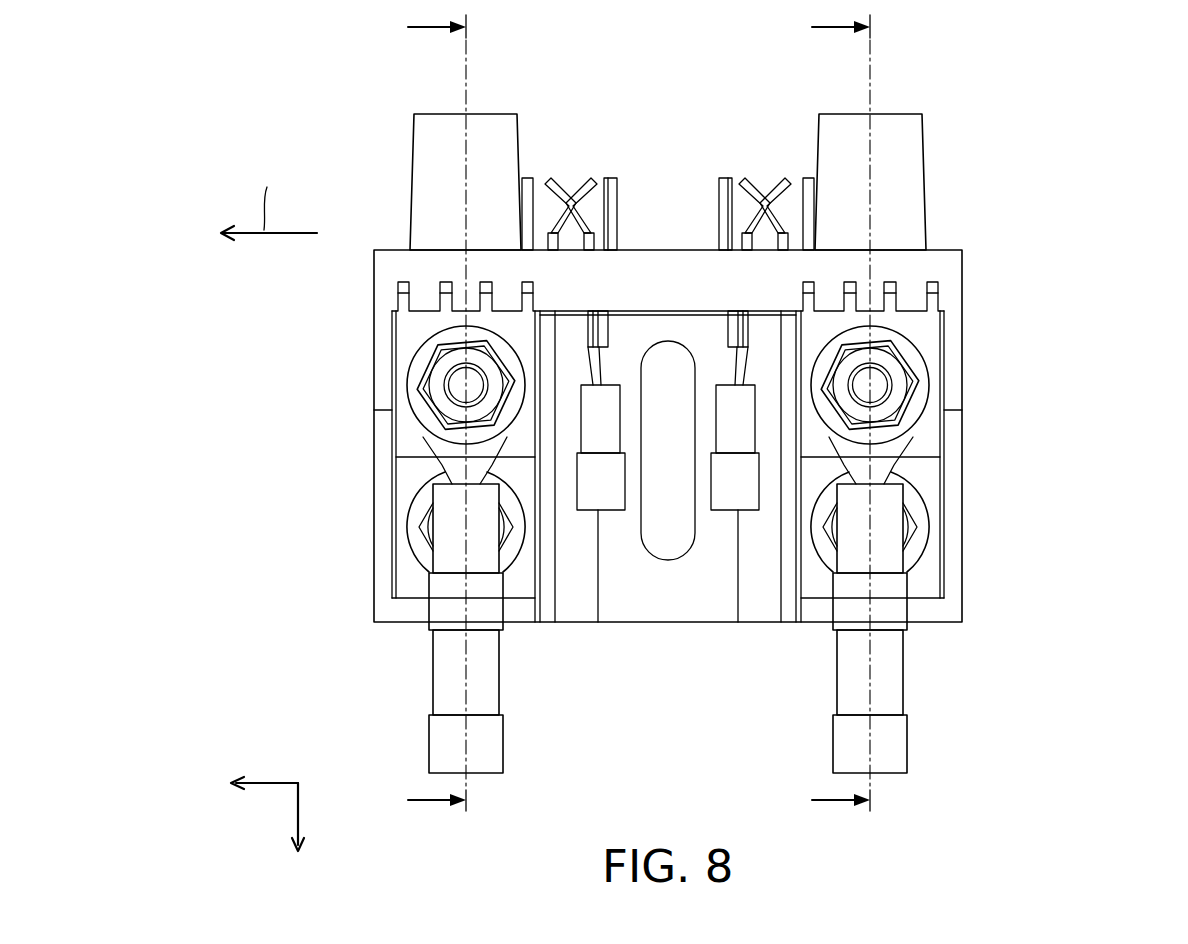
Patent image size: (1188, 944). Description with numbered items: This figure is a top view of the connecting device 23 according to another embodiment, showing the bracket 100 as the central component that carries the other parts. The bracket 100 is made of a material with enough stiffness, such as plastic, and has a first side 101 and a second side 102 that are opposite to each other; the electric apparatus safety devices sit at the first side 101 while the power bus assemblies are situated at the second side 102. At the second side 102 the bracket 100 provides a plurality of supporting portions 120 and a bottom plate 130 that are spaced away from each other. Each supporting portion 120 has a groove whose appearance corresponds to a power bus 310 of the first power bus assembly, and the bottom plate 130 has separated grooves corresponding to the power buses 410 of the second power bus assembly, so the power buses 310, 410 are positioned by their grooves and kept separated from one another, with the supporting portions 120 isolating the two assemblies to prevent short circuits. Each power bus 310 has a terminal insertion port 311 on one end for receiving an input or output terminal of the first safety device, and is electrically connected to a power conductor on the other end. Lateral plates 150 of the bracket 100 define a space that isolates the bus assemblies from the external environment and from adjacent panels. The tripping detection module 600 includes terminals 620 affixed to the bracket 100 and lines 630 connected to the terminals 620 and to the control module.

The connecting device 23 is at (238, 39).
The bracket 100 is at (930, 265).
The first side 101 is at (670, 232).
The second side 102 is at (698, 333).
The supporting portion 120 is at (547, 386).
The bottom plate 130 is at (718, 600).
The lateral plate 150 is at (385, 513).
The power bus 310 is at (418, 331).
The terminal insertion port 311 is at (435, 114).
The power bus 410 is at (418, 578).
The tripping detection module 600 is at (598, 160).
The terminal 620 is at (580, 203).
The line 630 is at (738, 492).